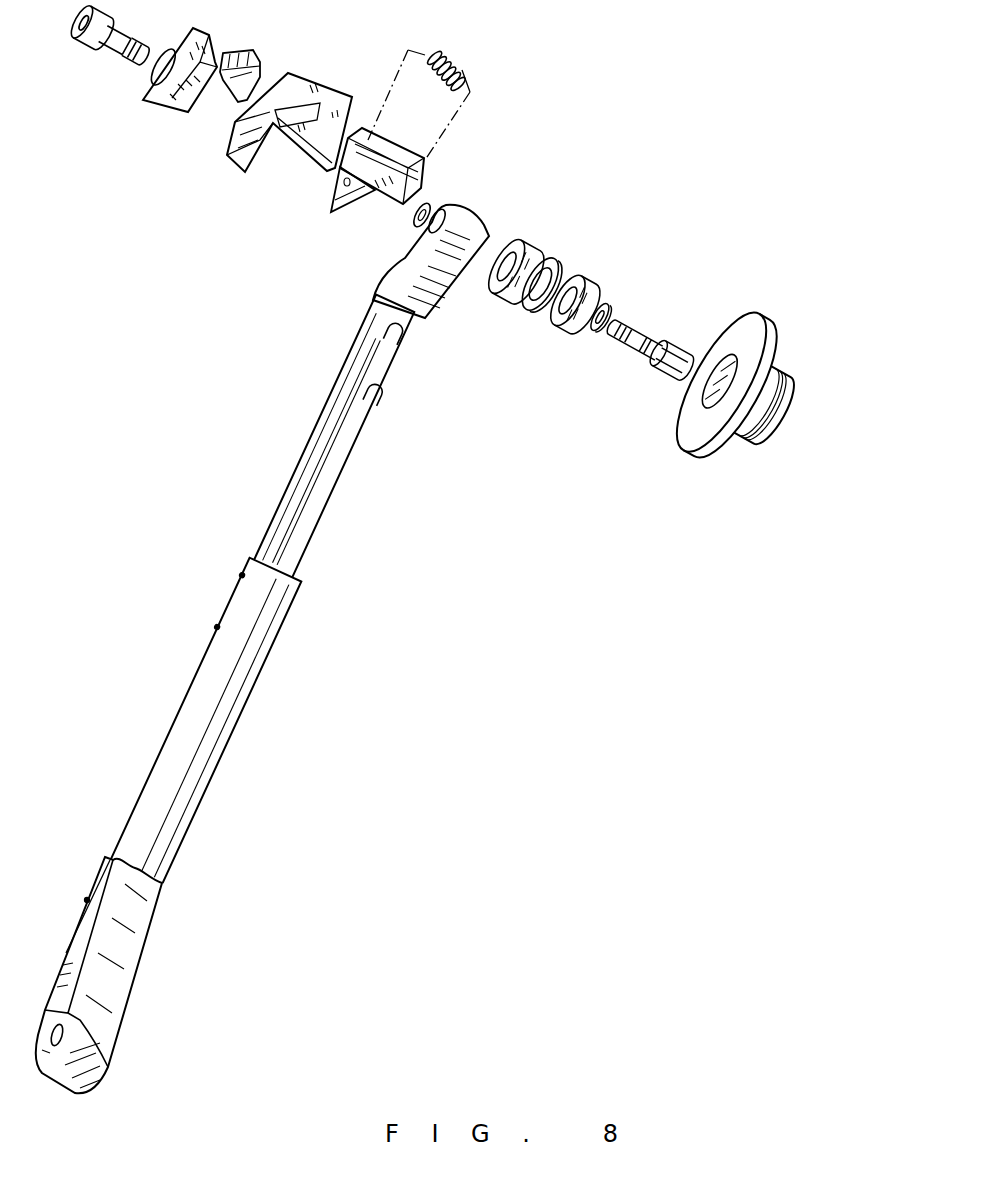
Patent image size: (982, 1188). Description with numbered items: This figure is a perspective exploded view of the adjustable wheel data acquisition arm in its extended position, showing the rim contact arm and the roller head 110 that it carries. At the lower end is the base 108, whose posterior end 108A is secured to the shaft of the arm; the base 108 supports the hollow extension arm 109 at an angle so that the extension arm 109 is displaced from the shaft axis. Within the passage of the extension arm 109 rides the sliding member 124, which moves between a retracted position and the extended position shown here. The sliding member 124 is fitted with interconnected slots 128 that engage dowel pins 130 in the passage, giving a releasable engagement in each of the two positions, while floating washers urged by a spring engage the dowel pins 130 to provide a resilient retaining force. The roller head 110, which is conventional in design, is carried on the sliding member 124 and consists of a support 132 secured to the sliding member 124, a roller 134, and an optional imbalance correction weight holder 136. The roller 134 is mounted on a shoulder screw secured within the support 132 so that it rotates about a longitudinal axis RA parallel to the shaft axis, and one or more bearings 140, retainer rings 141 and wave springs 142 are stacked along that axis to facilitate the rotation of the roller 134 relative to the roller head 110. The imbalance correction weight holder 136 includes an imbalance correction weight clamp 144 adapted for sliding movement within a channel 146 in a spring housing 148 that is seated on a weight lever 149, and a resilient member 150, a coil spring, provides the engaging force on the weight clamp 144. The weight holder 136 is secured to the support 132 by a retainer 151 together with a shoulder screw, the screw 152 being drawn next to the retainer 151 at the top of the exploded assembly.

The base 108 is at (122, 963).
The posterior end 108A is at (86, 1062).
The extension arm 109 is at (190, 766).
The roller head 110 is at (690, 246).
The sliding member 124 is at (302, 488).
The interconnected slots 128 is at (397, 334).
The dowel pins 130 is at (240, 576).
The support 132 is at (443, 297).
The roller 134 is at (763, 440).
The imbalance correction weight holder 136 is at (426, 142).
The bearings 140 is at (517, 242).
The retainer rings 141 is at (557, 255).
The wave springs 142 is at (592, 328).
The imbalance correction weight clamp 144 is at (222, 78).
The channel 146 is at (426, 174).
The spring housing 148 is at (383, 192).
The weight lever 149 is at (303, 162).
The resilient member 150 is at (473, 63).
The retainer 151 is at (150, 104).
The socket head screw 152 is at (102, 52).
The longitudinal axis RA is at (787, 422).